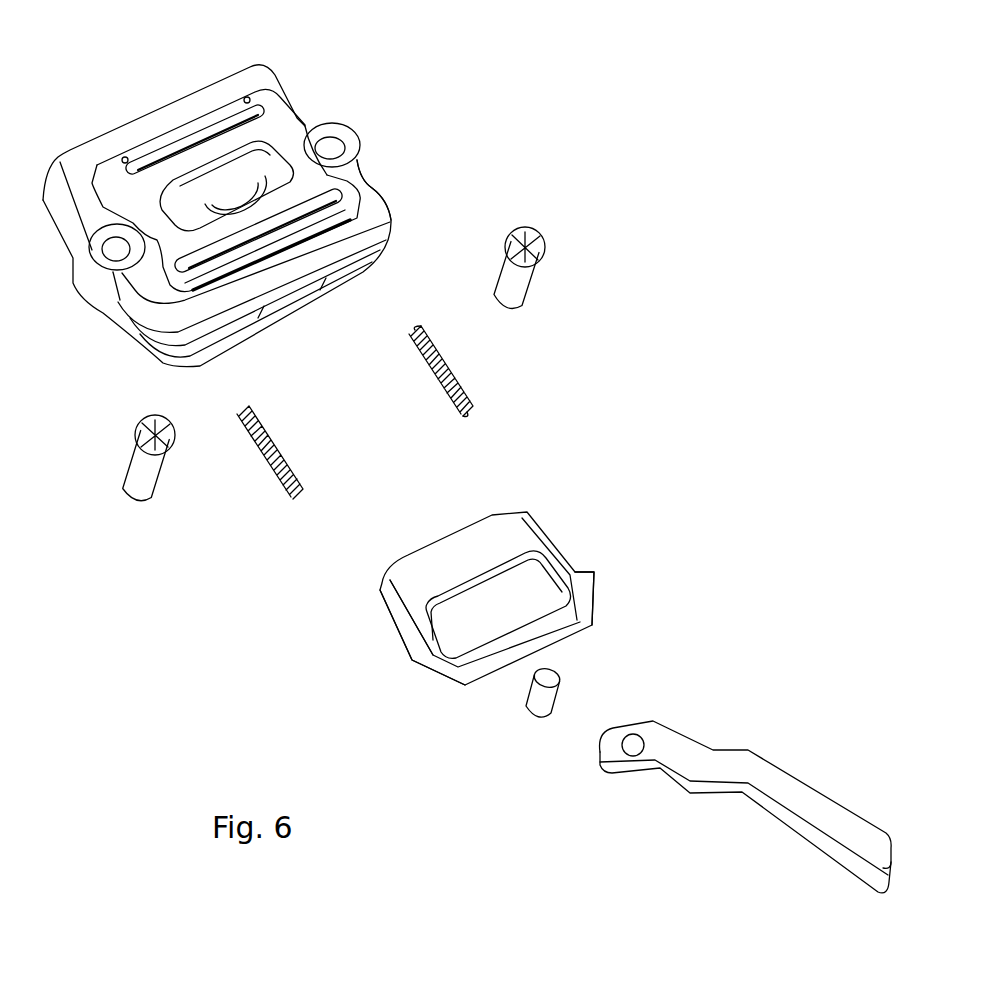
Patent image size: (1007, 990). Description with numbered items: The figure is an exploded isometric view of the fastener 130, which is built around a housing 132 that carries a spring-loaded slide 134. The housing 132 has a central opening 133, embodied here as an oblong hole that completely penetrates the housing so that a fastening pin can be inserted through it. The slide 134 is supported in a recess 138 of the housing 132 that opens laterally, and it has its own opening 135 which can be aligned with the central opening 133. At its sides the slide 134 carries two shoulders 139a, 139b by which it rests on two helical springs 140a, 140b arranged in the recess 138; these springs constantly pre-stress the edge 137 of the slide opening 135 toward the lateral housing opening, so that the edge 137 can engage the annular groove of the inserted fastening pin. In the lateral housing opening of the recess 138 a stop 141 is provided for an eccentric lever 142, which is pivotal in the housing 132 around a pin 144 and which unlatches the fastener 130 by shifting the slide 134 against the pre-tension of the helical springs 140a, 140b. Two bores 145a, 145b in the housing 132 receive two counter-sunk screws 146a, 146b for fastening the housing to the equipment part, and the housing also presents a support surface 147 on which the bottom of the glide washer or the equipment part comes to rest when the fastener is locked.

The fastener 130 is at (603, 374).
The housing 132 is at (375, 220).
The central opening 133 is at (233, 200).
The slide 134 is at (530, 530).
The opening 135 is at (537, 600).
The edge 137 is at (488, 588).
The recess 138 is at (352, 267).
The shoulder 139a is at (412, 655).
The shoulder 139b is at (587, 575).
The helical spring 140a is at (472, 390).
The helical spring 140b is at (303, 480).
The stop 141 is at (273, 302).
The eccentric lever 142 is at (775, 780).
The pin 144 is at (549, 678).
The bore 145a is at (116, 251).
The bore 145b is at (331, 148).
The counter-sunk screw 146a is at (162, 421).
The counter-sunk screw 146b is at (533, 233).
The support surface 147 is at (327, 178).